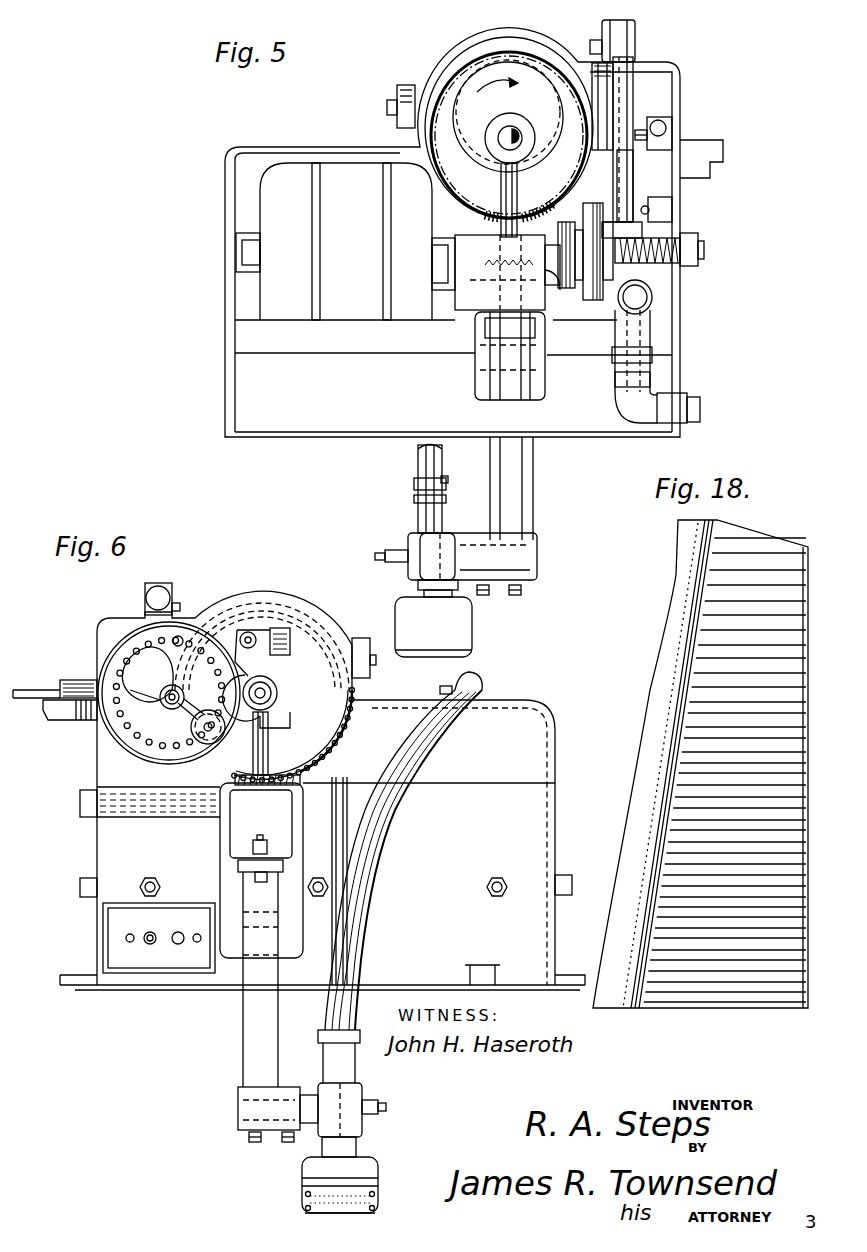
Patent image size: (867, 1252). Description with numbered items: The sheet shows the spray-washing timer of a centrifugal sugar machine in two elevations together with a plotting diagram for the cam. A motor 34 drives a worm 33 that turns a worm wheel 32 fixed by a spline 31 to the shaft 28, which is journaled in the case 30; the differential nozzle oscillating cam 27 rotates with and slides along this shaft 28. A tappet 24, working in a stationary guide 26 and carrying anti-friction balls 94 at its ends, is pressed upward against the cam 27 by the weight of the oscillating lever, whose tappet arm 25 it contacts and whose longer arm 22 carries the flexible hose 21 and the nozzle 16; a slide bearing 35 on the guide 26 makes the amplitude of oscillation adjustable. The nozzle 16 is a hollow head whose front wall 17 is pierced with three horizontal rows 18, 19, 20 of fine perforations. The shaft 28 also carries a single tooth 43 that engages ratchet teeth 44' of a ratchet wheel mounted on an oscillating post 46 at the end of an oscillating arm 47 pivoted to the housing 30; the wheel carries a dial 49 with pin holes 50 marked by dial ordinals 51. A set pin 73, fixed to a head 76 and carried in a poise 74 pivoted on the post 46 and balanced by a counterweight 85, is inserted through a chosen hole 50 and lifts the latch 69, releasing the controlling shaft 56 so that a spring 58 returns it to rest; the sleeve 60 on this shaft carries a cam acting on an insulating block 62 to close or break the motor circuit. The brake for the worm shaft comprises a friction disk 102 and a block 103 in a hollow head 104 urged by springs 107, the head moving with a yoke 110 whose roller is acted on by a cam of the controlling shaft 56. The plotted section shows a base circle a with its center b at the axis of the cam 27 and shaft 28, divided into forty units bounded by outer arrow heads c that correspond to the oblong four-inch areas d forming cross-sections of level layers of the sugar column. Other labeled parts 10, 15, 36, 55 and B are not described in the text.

In FIG. 5, the bracket / mounting arrow indicator 10 is at (752, 152).
In FIG. 6, the bracket / mounting arrow indicator 10 is at (72, 773).
In FIG. 6, the lever 15 is at (72, 667).
In FIG. 5, the nozzle 16 is at (475, 627).
In FIG. 6, the nozzle 16 is at (380, 1168).
In FIG. 6, the front wall 17 is at (304, 1186).
In FIG. 6, the upper row of perforations 18 is at (374, 1197).
In FIG. 6, the middle row of perforations 19 is at (376, 1204).
In FIG. 6, the lower row of perforations 20 is at (368, 1212).
In FIG. 5, the flexible hose 21 is at (443, 466).
In FIG. 6, the flexible hose 21 is at (380, 825).
In FIG. 5, the oscillating arm 22 is at (530, 486).
In FIG. 6, the oscillating arm 22 is at (244, 1020).
In FIG. 5, the tappet 24 is at (520, 192).
In FIG. 6, the tappet 24 is at (292, 735).
In FIG. 5, the tappet arm 25 is at (497, 335).
In FIG. 5, the stationary guide 26 is at (545, 289).
In FIG. 5, the differential cam 27 is at (463, 146).
In FIG. 6, the differential cam 27 is at (275, 702).
In FIG. 5, the shaft 28 is at (521, 138).
In FIG. 6, the shaft 28 is at (270, 686).
In FIG. 5, the case 30 is at (226, 184).
In FIG. 6, the case 30 is at (549, 727).
In FIG. 5, the spline 31 is at (513, 131).
In FIG. 5, the worm wheel 32 is at (542, 212).
In FIG. 6, the worm wheel 32 is at (328, 752).
In FIG. 5, the worm 33 is at (490, 262).
In FIG. 5, the motor 34 is at (333, 178).
In FIG. 5, the slide bearing 35 is at (525, 352).
In FIG. 6, the slide bearing 35 is at (230, 880).
In FIG. 5, the base plate 36 is at (352, 338).
In FIG. 6, the single tooth 43 is at (238, 778).
In FIG. 6, the bracket 44' is at (289, 627).
In FIG. 6, the oscillating post 46 is at (195, 725).
In FIG. 5, the oscillating arm 47 is at (636, 112).
In FIG. 6, the dial 49 is at (161, 638).
In FIG. 6, the pin holes 50 is at (122, 722).
In FIG. 6, the dial ordinals 51 is at (134, 755).
In FIG. 5, the cylinder / knob 55 is at (637, 45).
In FIG. 6, the cylinder / knob 55 is at (147, 597).
In FIG. 5, the controlling shaft 56 is at (625, 90).
In FIG. 5, the spring 58 is at (420, 100).
In FIG. 5, the sleeve 60 is at (634, 188).
In FIG. 5, the insulating block 62 is at (661, 212).
In FIG. 5, the latch 69 is at (668, 128).
In FIG. 6, the set pin 73 is at (182, 696).
In FIG. 6, the poise 74 is at (160, 700).
In FIG. 6, the head 76 is at (200, 740).
In FIG. 6, the counterweight 85 is at (160, 682).
In FIG. 5, the anti-friction balls 94 is at (501, 174).
In FIG. 6, the anti-friction balls 94 is at (256, 740).
In FIG. 5, the friction disk 102 is at (572, 290).
In FIG. 5, the brake shoe 103 is at (588, 302).
In FIG. 5, the hollow head 104 is at (652, 290).
In FIG. 5, the springs 107 is at (648, 250).
In FIG. 5, the yoke 110 is at (634, 238).
In FIG. 5, the coupling section B is at (512, 325).
In FIG. 18, the base circle a is at (800, 793).
In FIG. 18, the center b is at (702, 622).
In FIG. 18, the outer arrow heads c is at (697, 664).
In FIG. 18, the oblong areas d is at (724, 564).